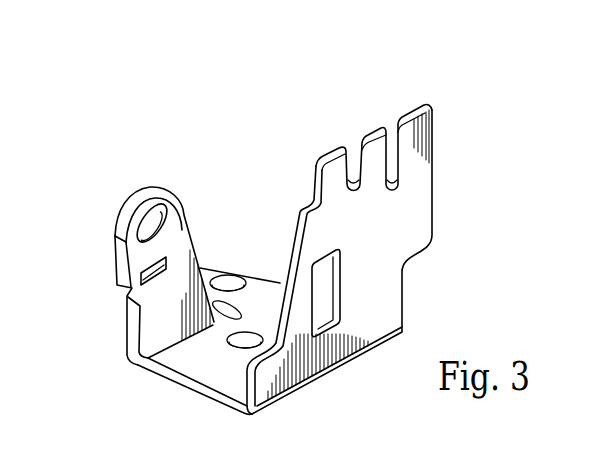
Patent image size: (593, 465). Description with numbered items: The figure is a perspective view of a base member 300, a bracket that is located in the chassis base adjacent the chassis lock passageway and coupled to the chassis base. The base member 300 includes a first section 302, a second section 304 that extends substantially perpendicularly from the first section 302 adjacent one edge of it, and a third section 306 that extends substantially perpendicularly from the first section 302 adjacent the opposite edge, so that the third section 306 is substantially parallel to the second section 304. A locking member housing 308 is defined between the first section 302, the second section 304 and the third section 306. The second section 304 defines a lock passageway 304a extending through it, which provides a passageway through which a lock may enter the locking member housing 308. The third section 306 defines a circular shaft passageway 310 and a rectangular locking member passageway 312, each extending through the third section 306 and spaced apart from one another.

The base member 300 is at (98, 81).
The first section 302 is at (203, 384).
The second section 304 is at (440, 206).
The lock passageway 304a is at (340, 288).
The third section 306 is at (127, 328).
The locking member housing 308 is at (270, 184).
The circular shaft passageway 310 is at (168, 228).
The rectangular locking member passageway 312 is at (141, 279).